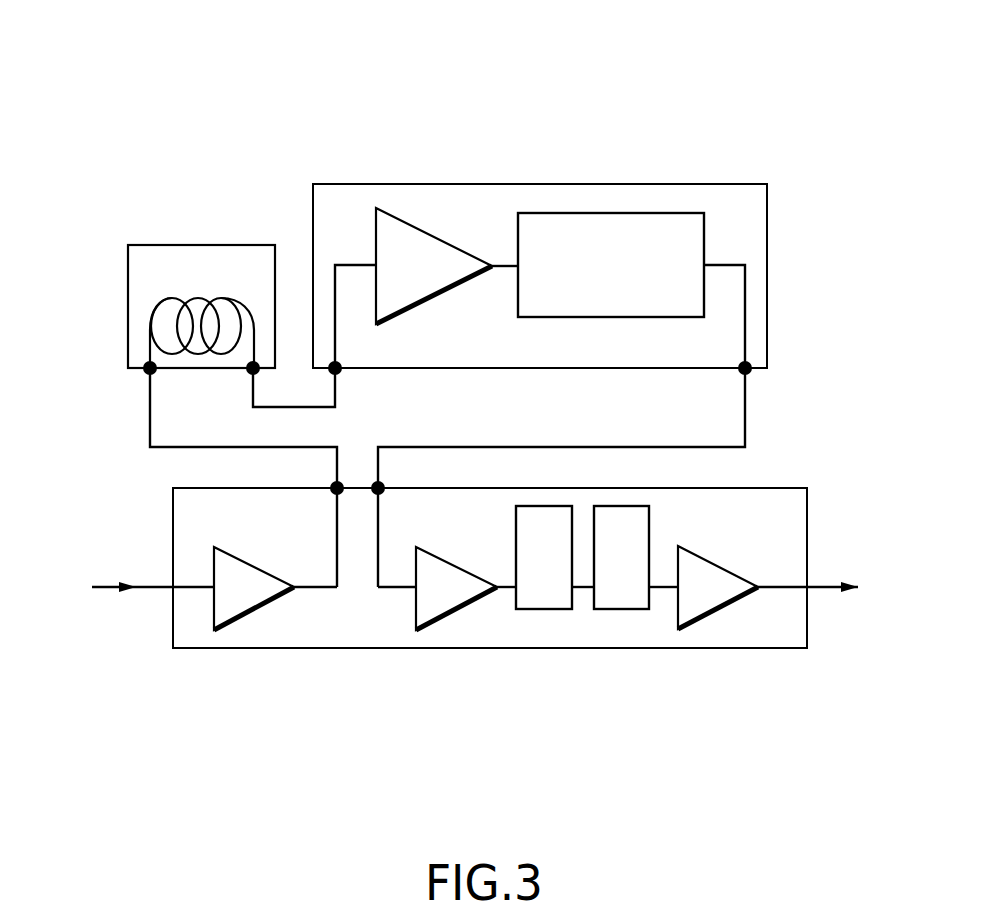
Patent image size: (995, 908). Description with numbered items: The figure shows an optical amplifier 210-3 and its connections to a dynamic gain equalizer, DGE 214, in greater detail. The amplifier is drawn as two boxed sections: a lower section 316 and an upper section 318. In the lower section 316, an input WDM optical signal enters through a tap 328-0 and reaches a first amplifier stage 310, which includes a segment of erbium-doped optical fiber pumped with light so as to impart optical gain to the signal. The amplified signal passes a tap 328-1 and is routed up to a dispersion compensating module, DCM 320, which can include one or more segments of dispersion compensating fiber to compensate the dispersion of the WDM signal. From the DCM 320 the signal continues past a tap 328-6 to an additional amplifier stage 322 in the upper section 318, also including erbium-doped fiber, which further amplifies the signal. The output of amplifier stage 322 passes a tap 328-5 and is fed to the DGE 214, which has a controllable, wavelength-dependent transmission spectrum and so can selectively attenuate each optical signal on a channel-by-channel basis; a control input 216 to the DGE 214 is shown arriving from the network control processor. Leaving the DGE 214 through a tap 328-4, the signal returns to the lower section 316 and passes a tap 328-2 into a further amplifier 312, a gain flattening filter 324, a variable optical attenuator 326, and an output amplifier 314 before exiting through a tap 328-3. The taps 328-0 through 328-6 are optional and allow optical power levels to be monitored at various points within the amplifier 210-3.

The optical amplifier 210-3 is at (99, 120).
The dispersion compensating module 320 is at (181, 245).
The mid-stage amplifier/DGE section 318 is at (767, 210).
The additional amplifier stage 322 is at (413, 224).
The tap 328-6 is at (350, 260).
The tap 328-5 is at (485, 262).
The DGE 214 is at (622, 213).
The control signal from NCP 216 is at (562, 213).
The tap 328-4 is at (724, 262).
The amplifier section 316 is at (792, 486).
The tap 328-0 is at (173, 538).
The first amplifier stage 310 is at (223, 628).
The tap 328-1 is at (273, 602).
The tap 328-2 is at (402, 588).
The optical amplifier 312 is at (450, 610).
The gain flattening filter (GFF) 324 is at (545, 609).
The variable optical attenuator (VOA) 326 is at (618, 609).
The output optical amplifier 314 is at (708, 553).
The tap 328-3 is at (715, 614).